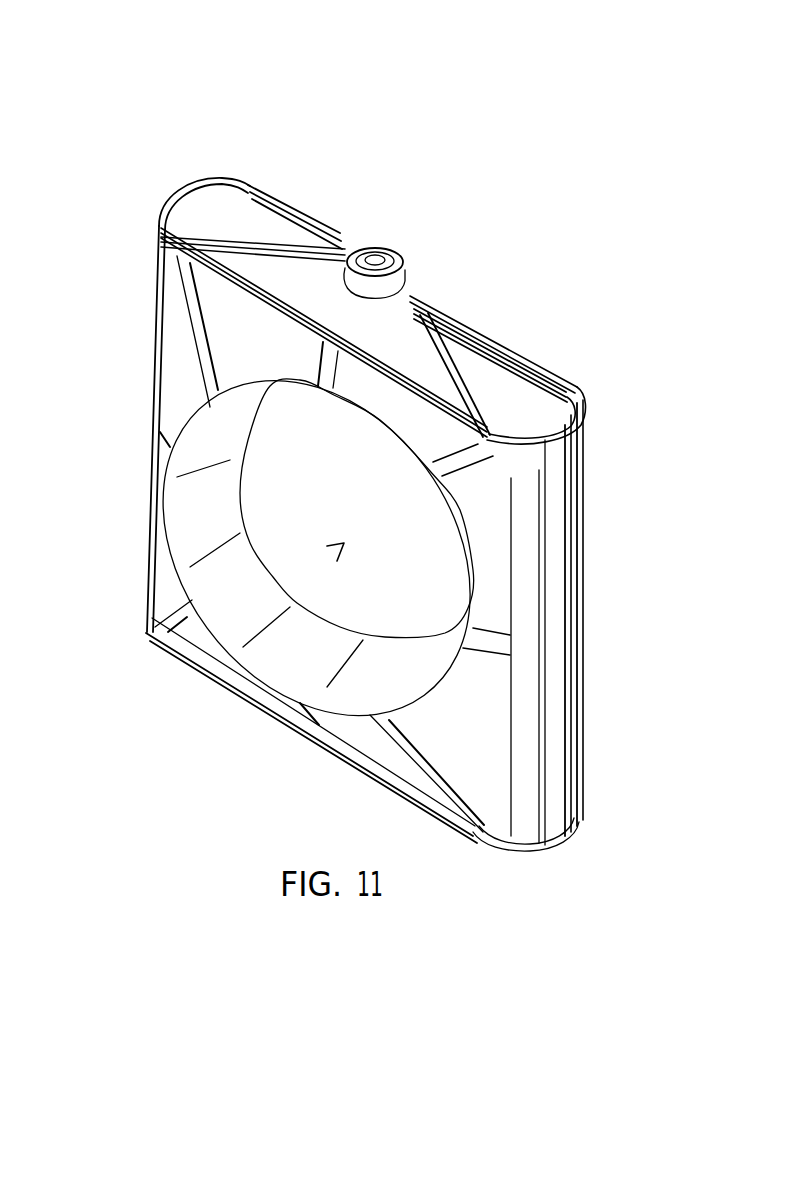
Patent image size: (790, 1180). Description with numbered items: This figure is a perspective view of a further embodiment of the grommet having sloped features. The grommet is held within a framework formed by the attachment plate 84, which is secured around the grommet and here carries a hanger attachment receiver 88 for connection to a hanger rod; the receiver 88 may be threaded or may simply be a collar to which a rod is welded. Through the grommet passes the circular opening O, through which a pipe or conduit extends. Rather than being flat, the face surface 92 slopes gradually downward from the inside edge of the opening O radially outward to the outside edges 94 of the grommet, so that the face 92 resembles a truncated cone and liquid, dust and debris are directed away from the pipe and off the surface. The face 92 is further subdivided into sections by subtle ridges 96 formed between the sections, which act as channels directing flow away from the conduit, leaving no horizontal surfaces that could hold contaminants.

The attachment plate 84 is at (243, 212).
The hanger attachment receiver 88 is at (381, 258).
The face surface 92 is at (457, 727).
The outside edges 94 is at (512, 573).
The ridges 96 is at (197, 347).
The circular opening O is at (343, 546).